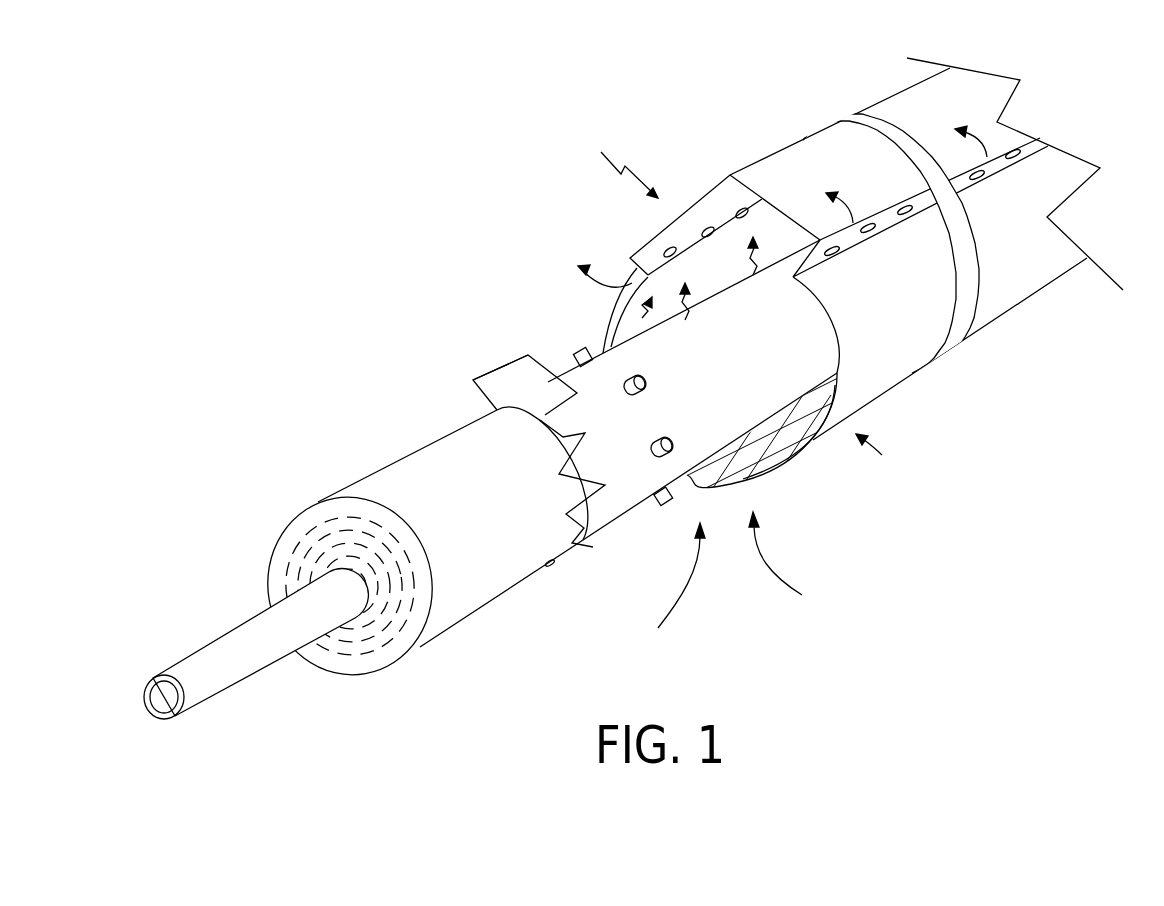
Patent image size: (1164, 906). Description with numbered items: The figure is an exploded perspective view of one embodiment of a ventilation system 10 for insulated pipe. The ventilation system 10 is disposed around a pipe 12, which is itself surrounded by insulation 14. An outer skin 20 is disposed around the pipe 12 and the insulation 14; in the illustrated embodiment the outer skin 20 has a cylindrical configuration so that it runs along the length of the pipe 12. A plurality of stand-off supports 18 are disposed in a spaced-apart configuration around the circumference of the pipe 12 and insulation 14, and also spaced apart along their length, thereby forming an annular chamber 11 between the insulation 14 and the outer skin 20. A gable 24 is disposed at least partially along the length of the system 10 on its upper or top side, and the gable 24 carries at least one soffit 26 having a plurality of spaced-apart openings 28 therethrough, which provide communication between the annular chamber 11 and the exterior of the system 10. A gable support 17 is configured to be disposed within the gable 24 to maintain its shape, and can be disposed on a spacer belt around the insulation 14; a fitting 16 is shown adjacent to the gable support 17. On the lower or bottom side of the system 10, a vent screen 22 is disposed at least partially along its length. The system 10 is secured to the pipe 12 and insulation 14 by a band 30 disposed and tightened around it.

The ventilation system 10 is at (609, 167).
The annular chamber 11 is at (632, 323).
The pipe 12 is at (203, 657).
The insulation 14 is at (393, 480).
The connector 16 is at (490, 375).
The gable support 17 is at (500, 380).
The stand-off supports 18 is at (582, 355).
The outer skin 20 is at (905, 373).
The vent screen 22 is at (738, 487).
The gable 24 is at (807, 153).
The soffit 26 is at (630, 268).
The openings 28 is at (740, 212).
The band 30 is at (967, 317).